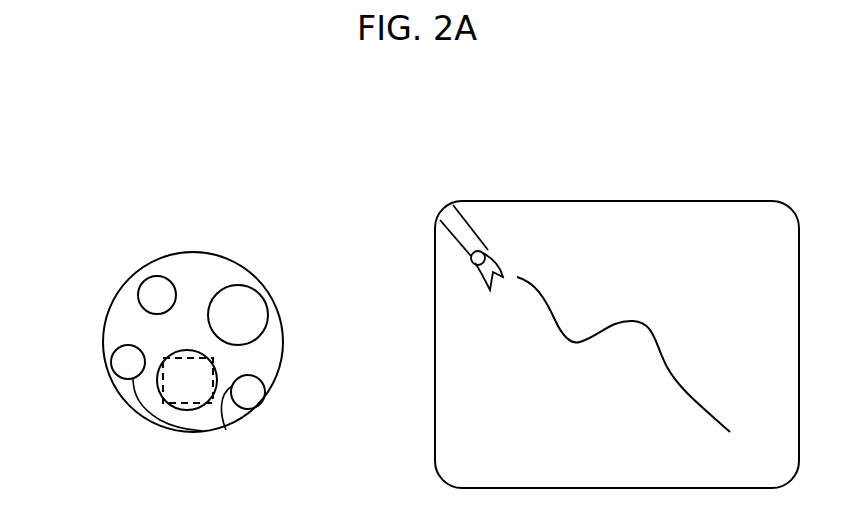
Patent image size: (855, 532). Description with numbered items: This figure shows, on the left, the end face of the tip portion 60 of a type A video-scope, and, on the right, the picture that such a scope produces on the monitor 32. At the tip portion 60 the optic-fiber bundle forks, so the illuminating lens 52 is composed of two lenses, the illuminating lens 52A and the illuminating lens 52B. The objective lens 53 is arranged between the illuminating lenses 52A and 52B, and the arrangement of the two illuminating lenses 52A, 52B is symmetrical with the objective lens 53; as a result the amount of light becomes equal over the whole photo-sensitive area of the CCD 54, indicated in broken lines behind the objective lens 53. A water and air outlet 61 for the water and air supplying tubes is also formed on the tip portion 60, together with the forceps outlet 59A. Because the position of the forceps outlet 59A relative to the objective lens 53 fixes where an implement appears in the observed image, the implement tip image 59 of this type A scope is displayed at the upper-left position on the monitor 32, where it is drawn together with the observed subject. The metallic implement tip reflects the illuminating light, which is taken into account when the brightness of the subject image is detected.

The tip portion 60 is at (210, 238).
The water and air outlet 61 is at (152, 277).
The forceps outlet 59A is at (238, 285).
The objective lens 53 is at (174, 353).
The CCD 54 is at (214, 377).
The illuminating lens 52A is at (110, 346).
The illuminating lens 52B is at (263, 381).
The illuminating lens 52 is at (226, 430).
The implement tip image 59 is at (474, 237).
The monitor 32 is at (619, 200).